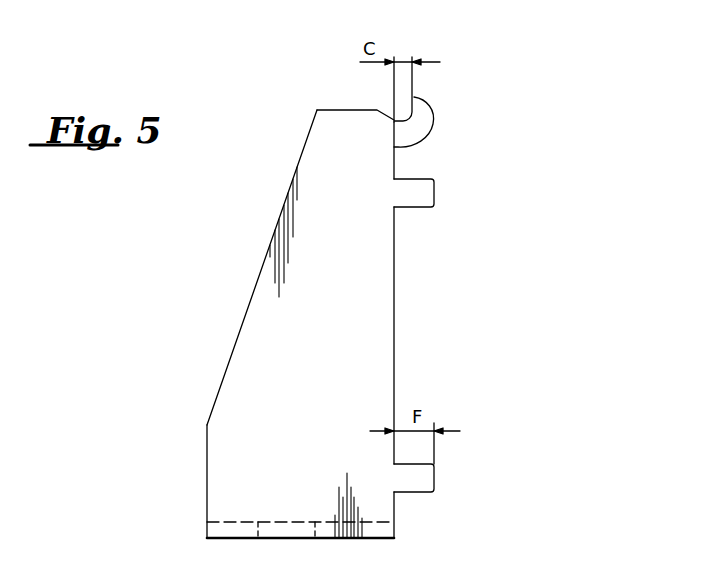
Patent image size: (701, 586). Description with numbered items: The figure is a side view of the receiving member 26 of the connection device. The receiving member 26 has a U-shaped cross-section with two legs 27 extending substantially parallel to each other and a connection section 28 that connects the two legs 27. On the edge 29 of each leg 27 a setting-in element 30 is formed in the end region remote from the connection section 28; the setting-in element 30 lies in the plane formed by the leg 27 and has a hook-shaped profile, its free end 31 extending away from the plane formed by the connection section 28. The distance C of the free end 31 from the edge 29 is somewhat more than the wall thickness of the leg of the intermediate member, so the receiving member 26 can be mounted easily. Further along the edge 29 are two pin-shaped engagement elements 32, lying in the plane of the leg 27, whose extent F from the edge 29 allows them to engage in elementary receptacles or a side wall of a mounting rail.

The receiving member 26 is at (533, 275).
The leg 27 is at (258, 340).
The connection section 28 is at (388, 528).
The edge 29 is at (395, 273).
The setting-in element 30 is at (433, 115).
The free end 31 is at (417, 103).
The engagement element 32 is at (417, 195).